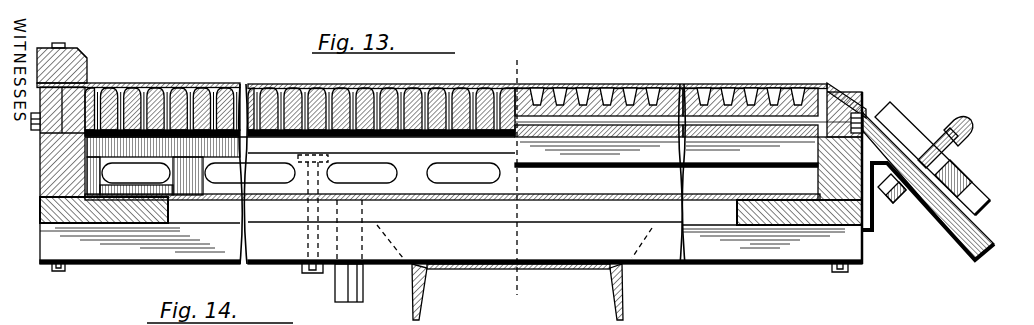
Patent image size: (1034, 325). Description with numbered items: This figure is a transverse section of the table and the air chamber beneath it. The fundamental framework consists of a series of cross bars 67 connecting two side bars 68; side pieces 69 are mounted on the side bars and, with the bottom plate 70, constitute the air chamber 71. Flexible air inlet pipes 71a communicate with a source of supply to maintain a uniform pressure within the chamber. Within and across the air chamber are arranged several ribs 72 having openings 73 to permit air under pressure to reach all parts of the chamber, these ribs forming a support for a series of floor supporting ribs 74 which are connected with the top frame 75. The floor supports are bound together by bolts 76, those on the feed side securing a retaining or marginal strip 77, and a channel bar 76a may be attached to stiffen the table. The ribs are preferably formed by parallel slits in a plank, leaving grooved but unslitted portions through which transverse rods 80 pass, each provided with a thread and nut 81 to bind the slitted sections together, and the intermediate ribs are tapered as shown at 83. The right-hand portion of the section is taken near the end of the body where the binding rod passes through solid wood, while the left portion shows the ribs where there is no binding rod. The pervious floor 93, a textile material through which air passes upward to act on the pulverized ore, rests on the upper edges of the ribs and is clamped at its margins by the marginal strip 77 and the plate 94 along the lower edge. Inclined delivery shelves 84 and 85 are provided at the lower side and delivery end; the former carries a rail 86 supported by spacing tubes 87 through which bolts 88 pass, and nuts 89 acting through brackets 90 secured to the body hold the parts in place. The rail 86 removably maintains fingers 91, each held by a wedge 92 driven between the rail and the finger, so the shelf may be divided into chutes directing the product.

The pervious floor 93 is at (38, 83).
The top frame 75 is at (58, 83).
The retaining or marginal strip 77 is at (80, 50).
The transverse rods 80 is at (48, 182).
The tapered intermediate ribs 83 is at (102, 84).
The inclined delivery shelf 85 is at (126, 84).
The floor supporting ribs 74 is at (377, 84).
The plate 94 is at (840, 92).
The thread and nut 81 is at (863, 114).
The air chamber 71 is at (413, 148).
The openings 73 is at (136, 173).
The ribs 72 is at (236, 176).
The flexible air inlet pipes 71a is at (336, 292).
The bottom plate 70 is at (577, 198).
The side pieces 69 is at (818, 156).
The side bars 68 is at (125, 218).
The cross bars 67 is at (451, 177).
The bolts 76 is at (856, 284).
The channel bar 76a is at (539, 292).
The brackets 90 is at (953, 233).
The inclined delivery shelf 84 is at (992, 248).
The nuts 89 is at (905, 204).
The wedge 92 is at (916, 117).
The fingers 91 is at (985, 207).
The spacing tubes 87 is at (934, 182).
The rail 86 is at (970, 143).
The bolts 88 is at (954, 125).